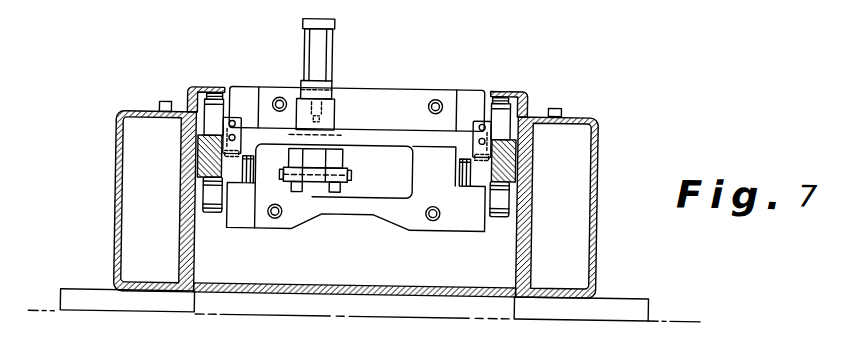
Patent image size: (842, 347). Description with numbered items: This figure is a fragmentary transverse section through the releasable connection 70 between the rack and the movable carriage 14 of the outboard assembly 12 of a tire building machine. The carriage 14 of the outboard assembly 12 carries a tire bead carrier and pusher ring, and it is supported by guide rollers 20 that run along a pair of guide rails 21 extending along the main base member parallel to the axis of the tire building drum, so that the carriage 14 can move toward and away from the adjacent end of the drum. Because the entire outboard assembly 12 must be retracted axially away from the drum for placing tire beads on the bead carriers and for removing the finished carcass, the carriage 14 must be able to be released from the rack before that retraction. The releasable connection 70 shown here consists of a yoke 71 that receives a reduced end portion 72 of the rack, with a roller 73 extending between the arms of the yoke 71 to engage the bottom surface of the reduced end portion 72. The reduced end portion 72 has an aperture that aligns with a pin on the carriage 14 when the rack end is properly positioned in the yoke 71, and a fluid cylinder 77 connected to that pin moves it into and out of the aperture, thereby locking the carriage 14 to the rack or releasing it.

The outboard assembly 12 is at (351, 136).
The carriage 14 is at (418, 92).
The guide rollers 20 is at (212, 202).
The guide rails 21 is at (212, 153).
The releasable connection 70 is at (341, 87).
The yoke 71 is at (337, 155).
The reduced end portion 72 is at (318, 158).
The roller 73 is at (303, 191).
The fluid cylinder 77 is at (332, 44).